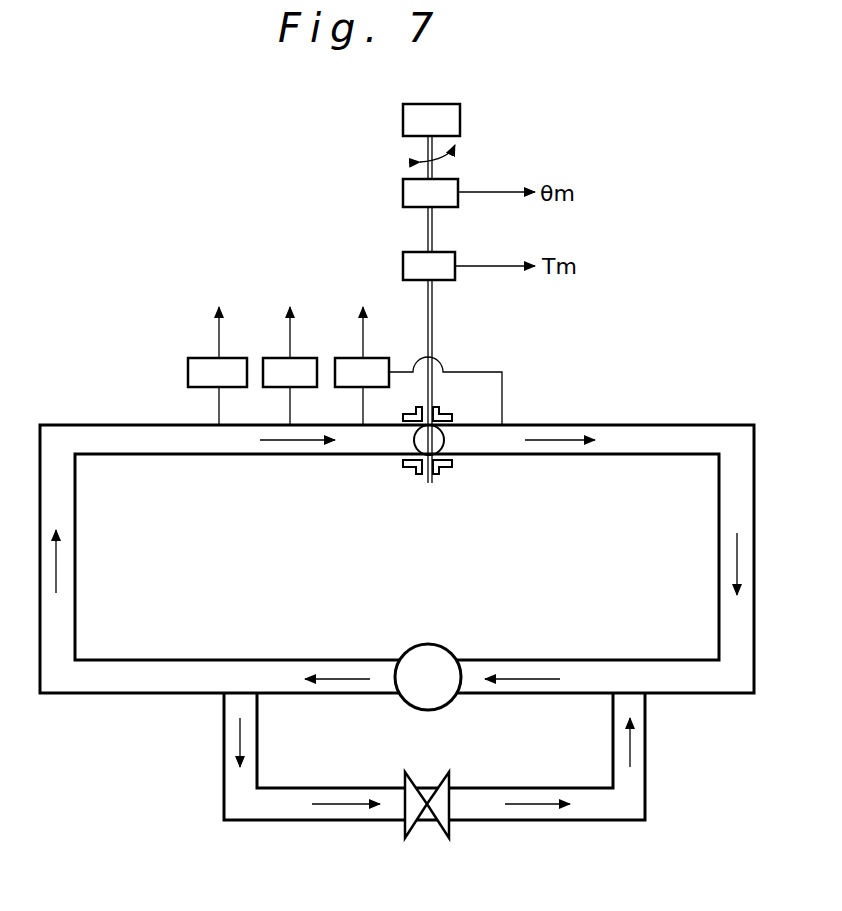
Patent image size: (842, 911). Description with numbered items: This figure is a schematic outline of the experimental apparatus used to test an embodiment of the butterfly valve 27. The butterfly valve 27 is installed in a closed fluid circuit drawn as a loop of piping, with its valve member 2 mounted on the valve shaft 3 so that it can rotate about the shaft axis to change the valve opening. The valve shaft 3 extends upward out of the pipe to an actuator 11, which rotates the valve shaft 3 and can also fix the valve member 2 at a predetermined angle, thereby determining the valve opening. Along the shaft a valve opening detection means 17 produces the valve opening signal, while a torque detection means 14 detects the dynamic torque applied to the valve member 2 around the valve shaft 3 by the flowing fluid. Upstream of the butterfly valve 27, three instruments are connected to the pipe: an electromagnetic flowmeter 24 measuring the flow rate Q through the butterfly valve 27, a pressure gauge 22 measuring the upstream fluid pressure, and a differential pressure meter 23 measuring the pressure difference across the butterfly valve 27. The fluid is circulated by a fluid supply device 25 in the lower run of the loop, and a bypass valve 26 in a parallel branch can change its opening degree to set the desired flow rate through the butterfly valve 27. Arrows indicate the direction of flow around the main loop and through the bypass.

The valve member 2 is at (440, 437).
The valve shaft 3 is at (434, 345).
The actuator 11 is at (403, 112).
The torque detection means 14 is at (403, 263).
The valve opening detection means 17 is at (403, 186).
The pressure gauge 22 is at (268, 365).
The differential pressure meter 23 is at (341, 365).
The electromagnetic flowmeter 24 is at (193, 365).
The fluid supply device 25 is at (448, 658).
The bypass valve 26 is at (445, 827).
The butterfly valve 27 is at (445, 468).